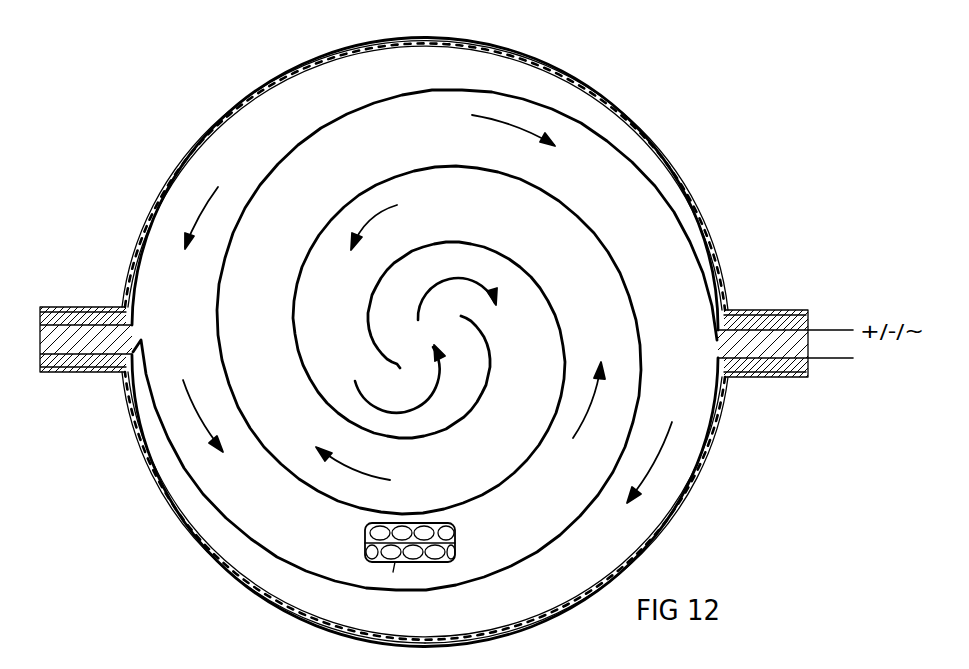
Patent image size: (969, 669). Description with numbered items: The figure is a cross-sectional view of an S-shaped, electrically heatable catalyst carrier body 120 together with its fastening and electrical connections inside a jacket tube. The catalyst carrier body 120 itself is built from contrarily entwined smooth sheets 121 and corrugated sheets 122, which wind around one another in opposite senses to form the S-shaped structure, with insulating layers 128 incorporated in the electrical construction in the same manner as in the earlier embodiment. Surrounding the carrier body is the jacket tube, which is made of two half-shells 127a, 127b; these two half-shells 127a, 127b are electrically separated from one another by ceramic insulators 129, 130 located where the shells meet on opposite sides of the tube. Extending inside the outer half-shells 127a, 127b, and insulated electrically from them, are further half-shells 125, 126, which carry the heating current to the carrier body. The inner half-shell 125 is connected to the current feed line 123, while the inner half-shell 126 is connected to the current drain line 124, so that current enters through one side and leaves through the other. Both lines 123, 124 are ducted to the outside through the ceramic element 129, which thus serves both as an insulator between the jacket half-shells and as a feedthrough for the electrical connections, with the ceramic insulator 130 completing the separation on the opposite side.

The catalyst carrier body 120 is at (550, 92).
The smooth sheets 121 is at (395, 562).
The corrugated sheets 122 is at (365, 536).
The current feed line 123 is at (818, 330).
The current drain line 124 is at (818, 358).
The further half-shell 125 is at (670, 162).
The further half-shell 126 is at (699, 476).
The half-shell of the jacket tube 127a is at (708, 222).
The half-shell of the jacket tube 127b is at (723, 426).
The insulating layers 128 is at (350, 196).
The ceramic insulator 129 is at (740, 318).
The ceramic insulator 130 is at (108, 318).